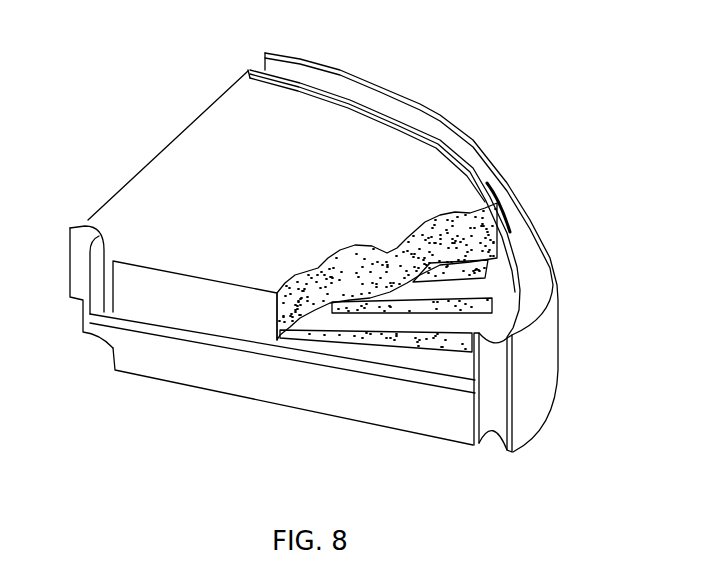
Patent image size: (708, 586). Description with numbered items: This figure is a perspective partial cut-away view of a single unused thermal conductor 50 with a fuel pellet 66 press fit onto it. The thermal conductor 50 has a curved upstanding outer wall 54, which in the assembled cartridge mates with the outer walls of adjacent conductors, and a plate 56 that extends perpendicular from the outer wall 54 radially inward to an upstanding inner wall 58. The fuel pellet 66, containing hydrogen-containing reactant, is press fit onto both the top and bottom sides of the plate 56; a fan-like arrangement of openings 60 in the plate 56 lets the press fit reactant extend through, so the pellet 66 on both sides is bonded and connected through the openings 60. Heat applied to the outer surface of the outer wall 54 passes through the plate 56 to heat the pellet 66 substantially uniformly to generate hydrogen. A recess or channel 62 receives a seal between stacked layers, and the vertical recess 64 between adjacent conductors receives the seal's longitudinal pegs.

The thermal conductor 50 is at (582, 297).
The curved upstanding outer wall 54 is at (548, 330).
The plate 56 is at (390, 370).
The upstanding inner wall 58 is at (70, 243).
The openings 60 is at (473, 298).
The recess or channel 62 is at (532, 228).
The vertical recess 64 is at (257, 66).
The fuel pellet 66 is at (355, 122).